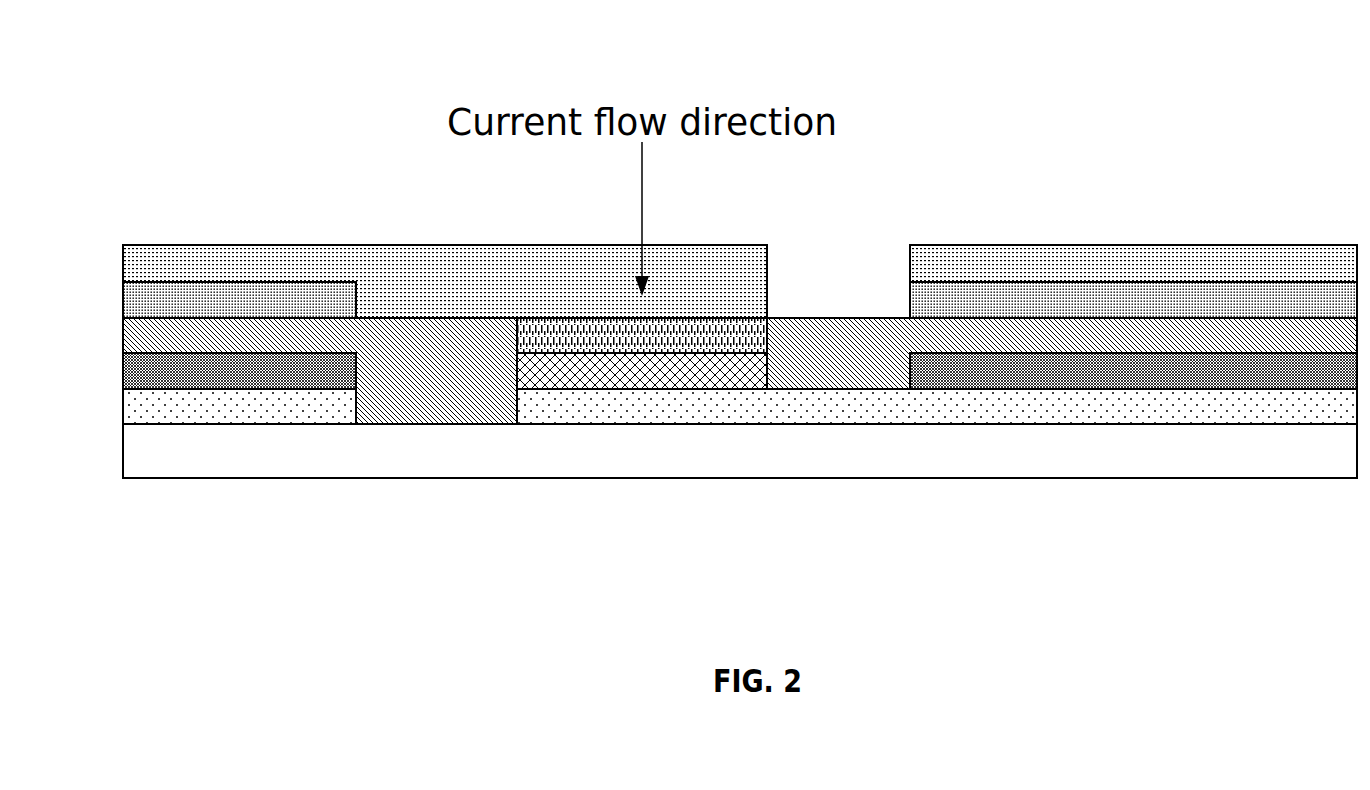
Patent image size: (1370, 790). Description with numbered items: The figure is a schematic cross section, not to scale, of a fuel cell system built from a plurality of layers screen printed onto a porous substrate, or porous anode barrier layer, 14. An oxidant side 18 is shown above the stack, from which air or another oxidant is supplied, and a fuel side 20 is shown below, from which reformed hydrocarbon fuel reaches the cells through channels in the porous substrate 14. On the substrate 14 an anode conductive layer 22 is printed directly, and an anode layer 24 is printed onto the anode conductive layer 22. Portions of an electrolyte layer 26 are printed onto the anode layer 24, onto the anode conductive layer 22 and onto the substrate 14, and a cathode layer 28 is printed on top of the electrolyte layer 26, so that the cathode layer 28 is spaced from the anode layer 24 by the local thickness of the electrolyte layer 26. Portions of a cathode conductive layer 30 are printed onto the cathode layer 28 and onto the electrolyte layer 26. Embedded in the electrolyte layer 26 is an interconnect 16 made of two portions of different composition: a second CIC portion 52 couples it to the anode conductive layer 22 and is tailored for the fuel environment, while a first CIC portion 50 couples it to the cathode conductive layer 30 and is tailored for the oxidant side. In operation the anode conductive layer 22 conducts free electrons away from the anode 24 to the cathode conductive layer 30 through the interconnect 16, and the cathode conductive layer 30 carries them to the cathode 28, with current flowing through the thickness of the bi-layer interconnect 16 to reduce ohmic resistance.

The substrate 14 is at (805, 469).
The interconnect 16 is at (735, 307).
The oxidant side 18 is at (1113, 168).
The fuel side 20 is at (745, 538).
The anode conductive layer 22 is at (298, 423).
The anode layer 24 is at (312, 387).
The electrolyte layer 26 is at (1257, 353).
The cathode layer 28 is at (327, 318).
The cathode conductive layer 30 is at (563, 291).
The first CIC portion 50 is at (715, 351).
The second CIC portion 52 is at (722, 387).